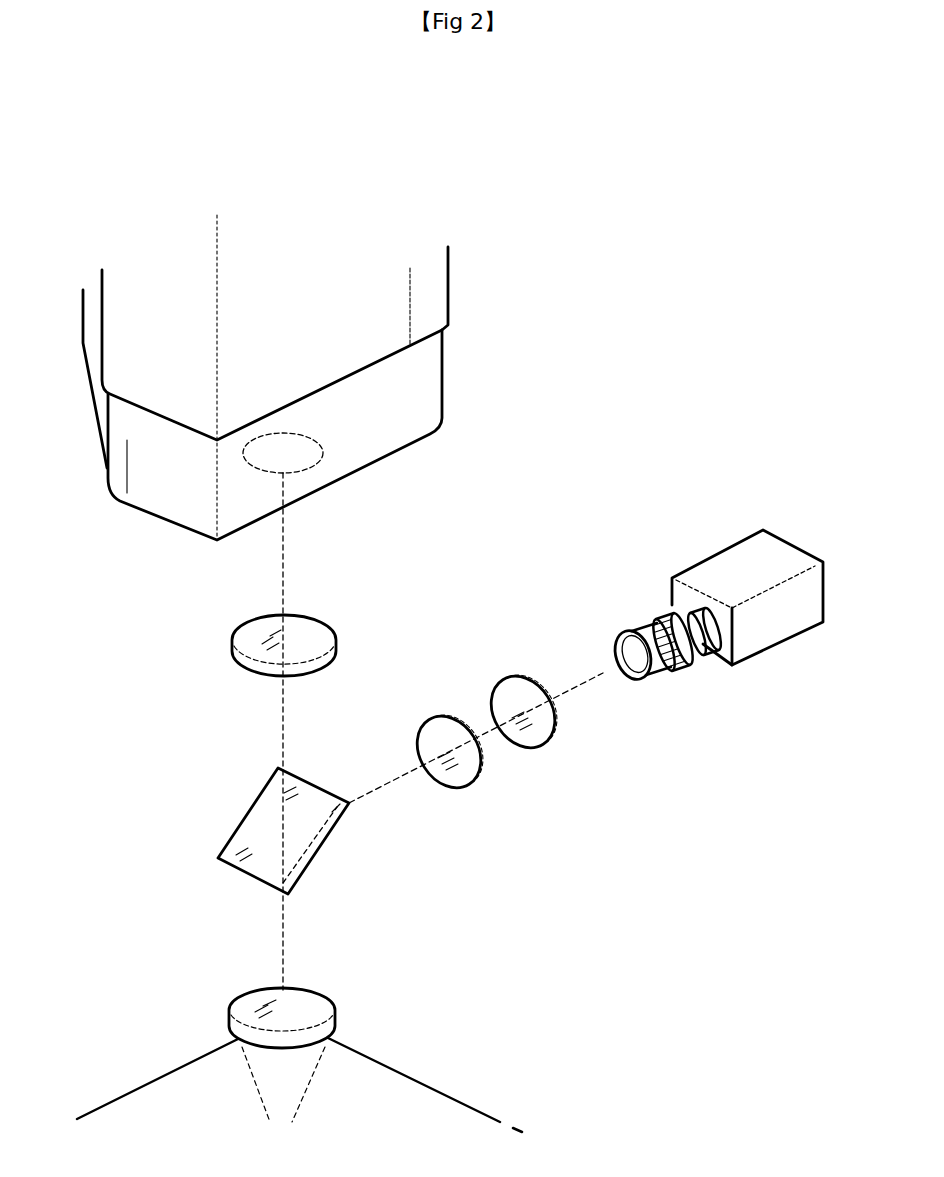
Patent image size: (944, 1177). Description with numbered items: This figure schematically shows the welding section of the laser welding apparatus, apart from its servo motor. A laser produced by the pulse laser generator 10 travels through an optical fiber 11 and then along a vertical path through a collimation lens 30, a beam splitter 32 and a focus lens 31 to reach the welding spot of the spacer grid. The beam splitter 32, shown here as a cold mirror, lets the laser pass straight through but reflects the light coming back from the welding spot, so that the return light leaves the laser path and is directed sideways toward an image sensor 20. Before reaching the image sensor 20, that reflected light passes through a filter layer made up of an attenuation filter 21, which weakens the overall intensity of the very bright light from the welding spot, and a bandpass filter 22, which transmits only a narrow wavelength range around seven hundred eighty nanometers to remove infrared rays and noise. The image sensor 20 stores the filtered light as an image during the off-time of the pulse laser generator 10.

The pulse laser generator 10 is at (418, 388).
The optical fiber 11 is at (283, 553).
The image sensor 20 is at (732, 560).
The attenuation filter 21 is at (450, 777).
The bandpass filter 22 is at (530, 740).
The collimation lens 30 is at (250, 630).
The focus lens 31 is at (260, 1000).
The beam splitter 32 is at (257, 817).